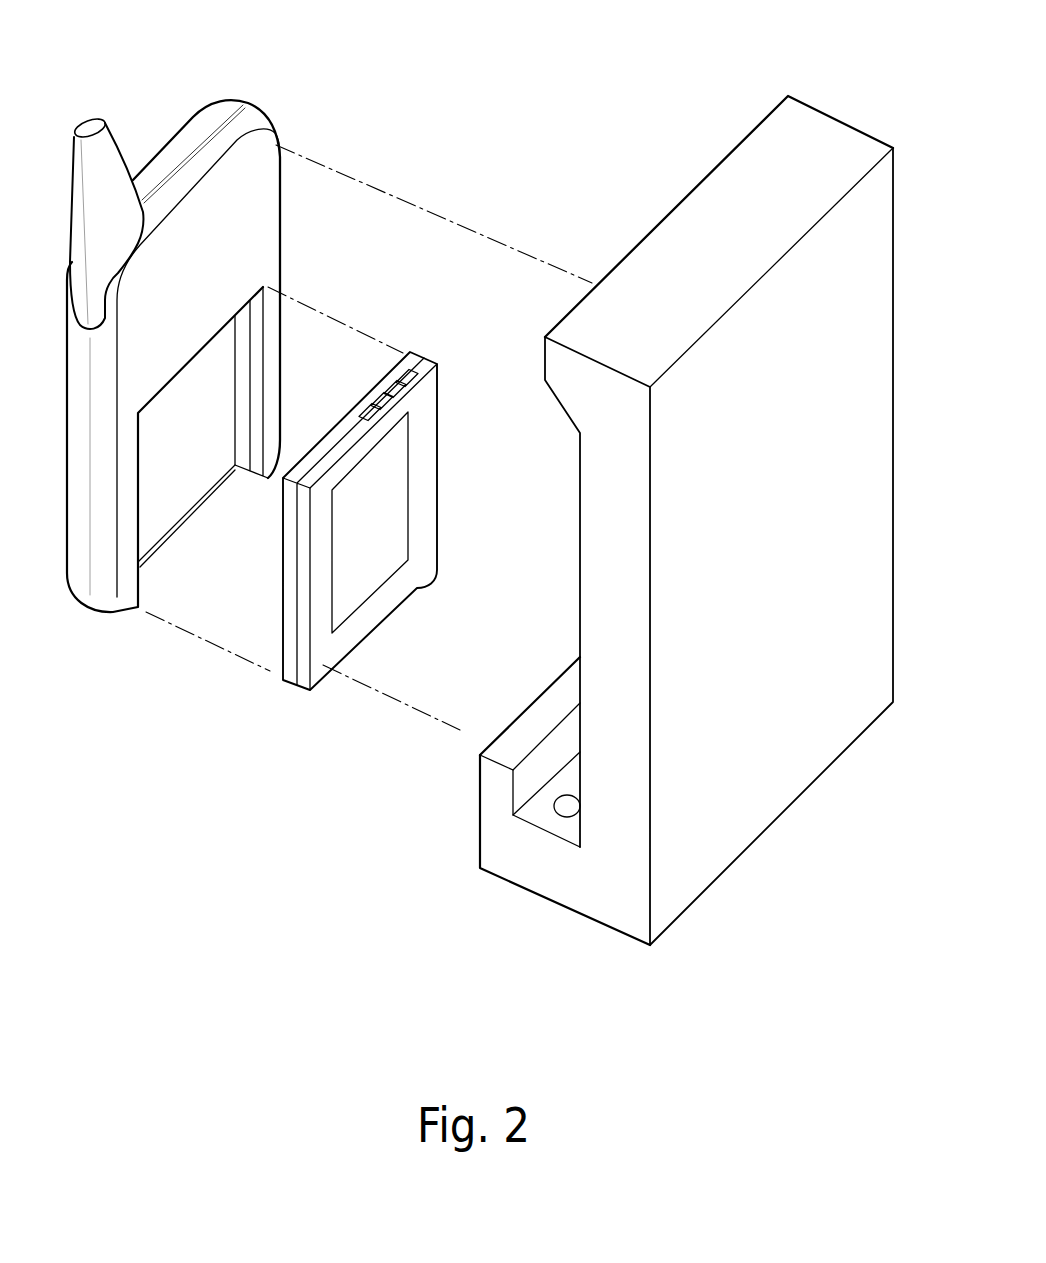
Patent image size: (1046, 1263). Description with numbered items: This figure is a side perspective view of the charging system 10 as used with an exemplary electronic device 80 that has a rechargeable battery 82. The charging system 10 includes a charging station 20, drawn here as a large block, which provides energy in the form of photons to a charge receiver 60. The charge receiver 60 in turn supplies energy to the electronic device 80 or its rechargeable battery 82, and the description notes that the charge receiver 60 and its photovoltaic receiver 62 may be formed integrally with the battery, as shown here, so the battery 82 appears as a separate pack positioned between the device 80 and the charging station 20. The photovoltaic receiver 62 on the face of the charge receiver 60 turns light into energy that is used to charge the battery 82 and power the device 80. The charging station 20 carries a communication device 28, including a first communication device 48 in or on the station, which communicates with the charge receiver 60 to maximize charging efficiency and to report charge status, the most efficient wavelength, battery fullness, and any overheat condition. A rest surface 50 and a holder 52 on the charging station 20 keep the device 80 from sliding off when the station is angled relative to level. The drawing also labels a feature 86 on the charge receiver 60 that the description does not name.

The charging system 10 is at (503, 479).
The charging station 20 is at (661, 523).
The communication device 28 is at (560, 810).
The first communication device 48 is at (567, 813).
The rest surface 50 is at (516, 803).
The holder 52 is at (542, 775).
The charge receiver 60 is at (322, 529).
The photovoltaic receiver 62 is at (372, 583).
The electronic device 80 is at (260, 185).
The rechargeable battery 82 is at (298, 558).
The electrical contacts 86 is at (406, 375).